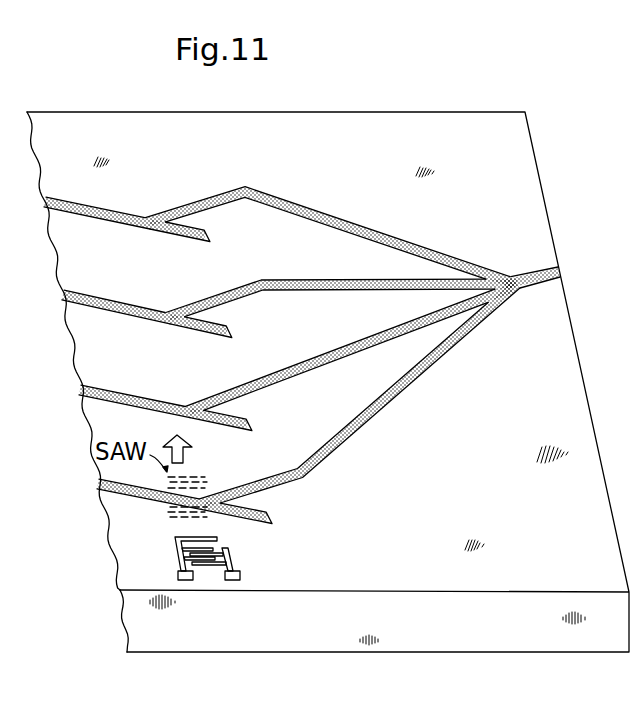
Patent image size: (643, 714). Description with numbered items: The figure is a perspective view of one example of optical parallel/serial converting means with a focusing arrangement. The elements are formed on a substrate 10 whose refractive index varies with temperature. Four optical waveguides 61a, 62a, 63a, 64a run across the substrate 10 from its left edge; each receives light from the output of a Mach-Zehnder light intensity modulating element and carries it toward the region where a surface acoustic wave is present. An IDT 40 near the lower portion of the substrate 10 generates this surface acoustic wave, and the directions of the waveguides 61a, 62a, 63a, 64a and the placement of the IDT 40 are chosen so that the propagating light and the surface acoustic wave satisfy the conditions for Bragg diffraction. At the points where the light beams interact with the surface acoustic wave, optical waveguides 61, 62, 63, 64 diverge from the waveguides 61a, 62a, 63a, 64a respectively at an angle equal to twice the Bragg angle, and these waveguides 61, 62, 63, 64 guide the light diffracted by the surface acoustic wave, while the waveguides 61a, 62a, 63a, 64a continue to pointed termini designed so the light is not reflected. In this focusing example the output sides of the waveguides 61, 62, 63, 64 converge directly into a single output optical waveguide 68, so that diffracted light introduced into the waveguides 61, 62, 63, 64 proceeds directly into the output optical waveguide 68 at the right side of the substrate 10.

The substrate 10 is at (304, 648).
The IDT 40 is at (235, 562).
The optical waveguide 61 is at (197, 201).
The optical waveguide 61a is at (168, 224).
The optical waveguide 62 is at (216, 294).
The optical waveguide 62a is at (182, 327).
The optical waveguide 63 is at (253, 382).
The optical waveguide 63a is at (226, 426).
The optical waveguide 64 is at (270, 477).
The optical waveguide 64a is at (254, 521).
The output optical waveguide 68 is at (523, 274).